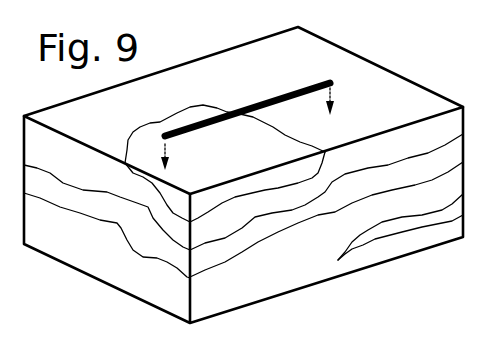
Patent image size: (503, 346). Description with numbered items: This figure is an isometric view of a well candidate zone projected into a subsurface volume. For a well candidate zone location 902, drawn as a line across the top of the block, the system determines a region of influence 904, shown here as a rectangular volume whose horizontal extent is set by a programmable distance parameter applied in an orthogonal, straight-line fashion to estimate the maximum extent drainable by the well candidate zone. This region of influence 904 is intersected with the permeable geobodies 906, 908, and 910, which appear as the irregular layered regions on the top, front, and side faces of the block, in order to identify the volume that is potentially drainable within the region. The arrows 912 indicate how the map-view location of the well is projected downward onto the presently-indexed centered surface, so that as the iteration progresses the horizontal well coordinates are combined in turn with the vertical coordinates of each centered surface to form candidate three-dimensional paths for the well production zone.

The well candidate zone location 902 is at (305, 88).
The region of influence 904 is at (402, 77).
The geobody 906 is at (244, 171).
The geobody 908 is at (149, 222).
The geobody 910 is at (450, 228).
The arrows 912 is at (266, 129).